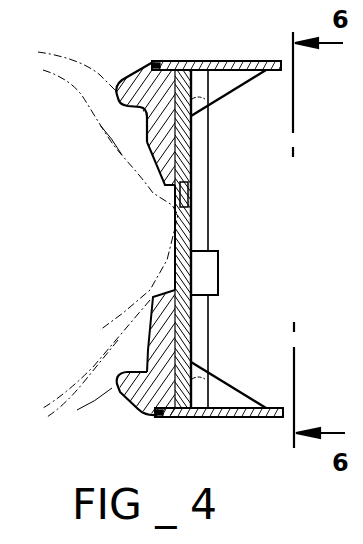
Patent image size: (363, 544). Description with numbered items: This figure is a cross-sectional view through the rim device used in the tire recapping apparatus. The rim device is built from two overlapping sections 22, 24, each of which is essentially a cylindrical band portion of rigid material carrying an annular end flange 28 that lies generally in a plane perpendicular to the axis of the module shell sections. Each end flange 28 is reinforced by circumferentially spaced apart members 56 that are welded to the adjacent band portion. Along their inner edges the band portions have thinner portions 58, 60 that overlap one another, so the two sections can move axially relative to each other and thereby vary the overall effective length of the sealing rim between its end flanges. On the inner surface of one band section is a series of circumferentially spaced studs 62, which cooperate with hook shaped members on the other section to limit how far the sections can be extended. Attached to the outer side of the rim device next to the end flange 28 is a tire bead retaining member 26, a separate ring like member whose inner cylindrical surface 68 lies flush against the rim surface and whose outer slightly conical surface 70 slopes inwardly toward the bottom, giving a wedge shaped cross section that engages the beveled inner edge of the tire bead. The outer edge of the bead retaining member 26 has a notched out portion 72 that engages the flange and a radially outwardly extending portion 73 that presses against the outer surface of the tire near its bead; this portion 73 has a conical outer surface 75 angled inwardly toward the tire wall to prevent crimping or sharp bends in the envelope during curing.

The overlapping section 22 is at (182, 335).
The overlapping section 24 is at (183, 153).
The tire bead retaining member 26 is at (147, 84).
The annular end flange 28 is at (248, 60).
The reinforcing member 56 is at (228, 80).
The thinner portion 58 is at (188, 228).
The thinner portion 60 is at (180, 203).
The stud 62 is at (210, 268).
The inner cylindrical surface 68 is at (176, 135).
The outer conical surface 70 is at (147, 142).
The notched out portion 72 is at (162, 60).
The radially outwardly extending portion 73 is at (133, 384).
The conical outer surface 75 is at (148, 338).